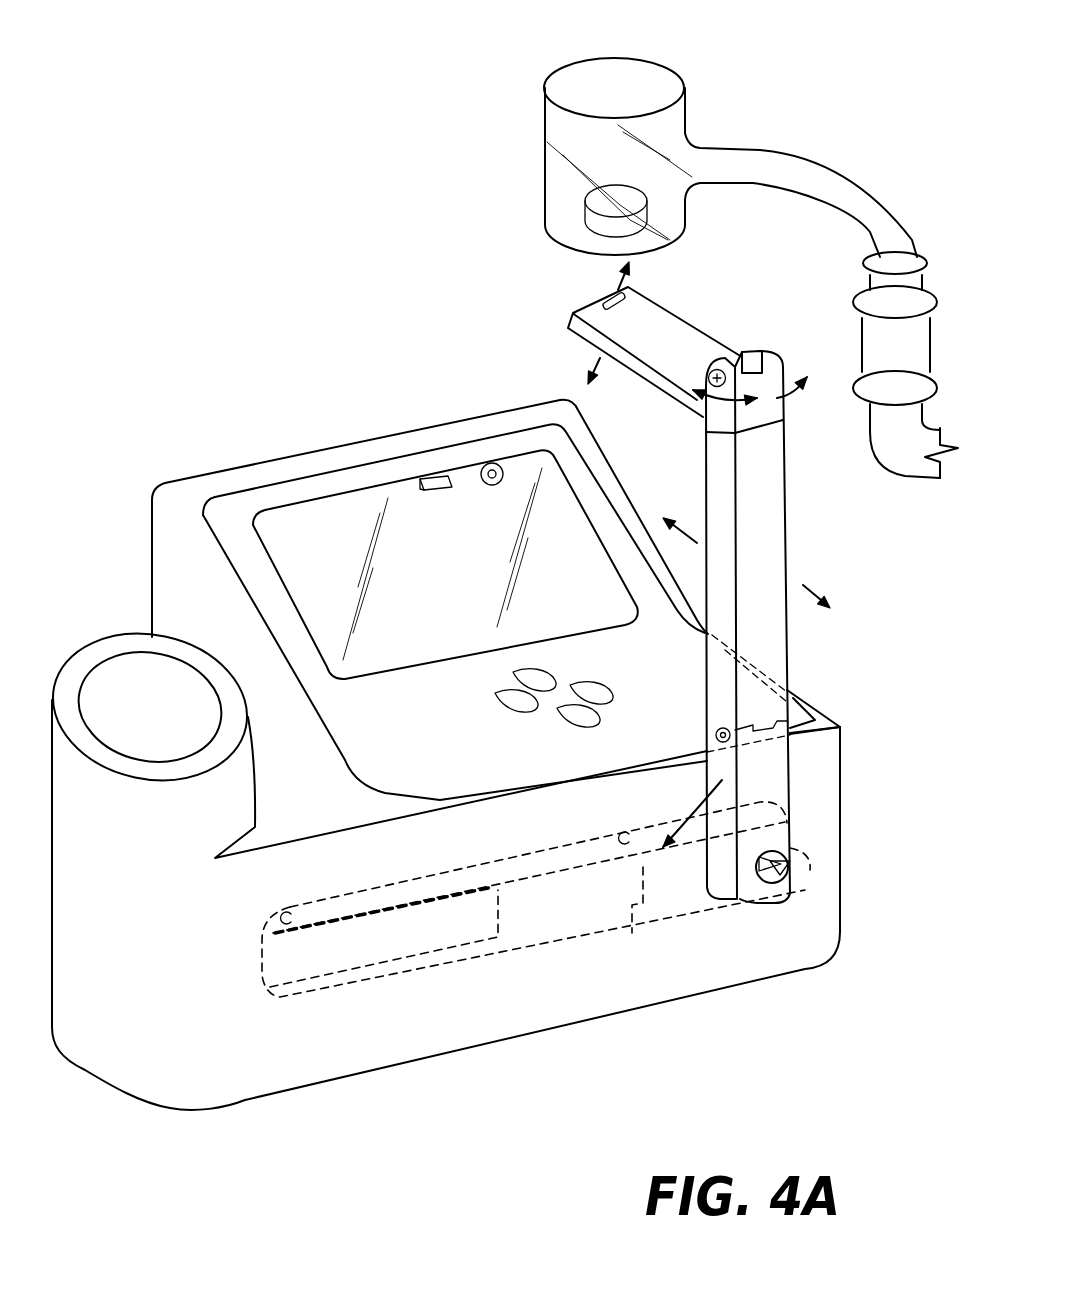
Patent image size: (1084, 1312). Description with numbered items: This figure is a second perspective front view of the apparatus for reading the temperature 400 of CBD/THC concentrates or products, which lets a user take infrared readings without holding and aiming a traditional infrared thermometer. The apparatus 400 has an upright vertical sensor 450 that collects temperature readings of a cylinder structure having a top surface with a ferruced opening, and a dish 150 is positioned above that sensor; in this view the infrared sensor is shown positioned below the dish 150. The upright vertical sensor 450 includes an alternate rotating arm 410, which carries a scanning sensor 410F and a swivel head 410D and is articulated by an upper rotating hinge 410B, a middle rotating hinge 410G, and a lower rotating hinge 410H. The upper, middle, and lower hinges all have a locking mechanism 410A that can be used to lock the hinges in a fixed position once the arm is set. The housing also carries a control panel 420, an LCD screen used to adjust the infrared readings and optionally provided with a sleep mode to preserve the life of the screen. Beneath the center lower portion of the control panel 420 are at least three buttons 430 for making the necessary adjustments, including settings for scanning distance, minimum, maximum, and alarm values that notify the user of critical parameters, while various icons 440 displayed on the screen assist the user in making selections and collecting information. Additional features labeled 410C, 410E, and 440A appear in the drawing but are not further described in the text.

The dish 150 is at (642, 58).
The apparatus for reading the temperature 400 is at (215, 372).
The rotating arm 410 is at (678, 330).
The locking mechanism 410A is at (790, 868).
The upper rotating hinge 410B is at (717, 370).
The arm storage slot 410C is at (477, 952).
The swivel head 410D is at (715, 418).
The arm mounting edge 410E is at (787, 657).
The scanning sensor 410F is at (605, 300).
The middle rotating hinge 410G is at (723, 740).
The lower rotating hinge 410H is at (780, 855).
The control panel 420 is at (583, 540).
The buttons 430 is at (553, 750).
The icons 440 is at (430, 477).
The camera / light sensor 440A is at (492, 463).
The upright vertical sensor 450 is at (72, 642).